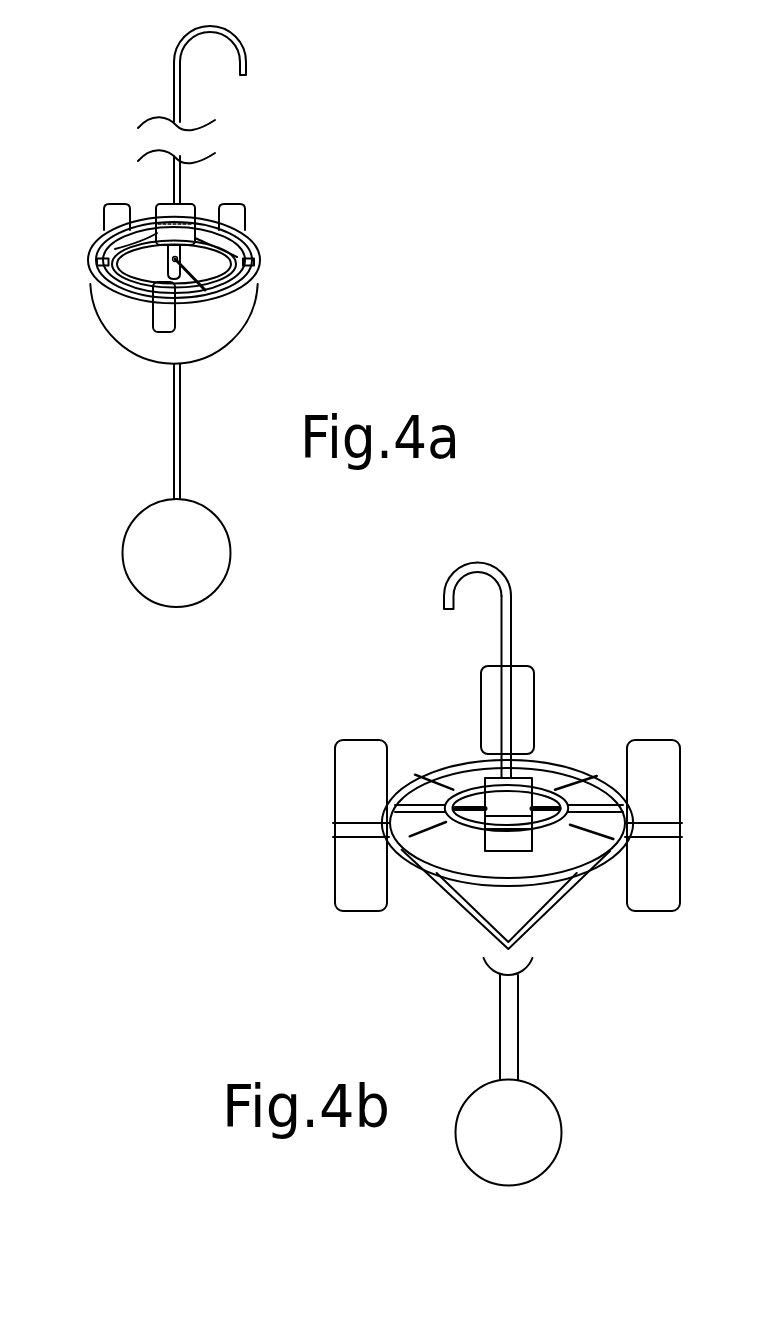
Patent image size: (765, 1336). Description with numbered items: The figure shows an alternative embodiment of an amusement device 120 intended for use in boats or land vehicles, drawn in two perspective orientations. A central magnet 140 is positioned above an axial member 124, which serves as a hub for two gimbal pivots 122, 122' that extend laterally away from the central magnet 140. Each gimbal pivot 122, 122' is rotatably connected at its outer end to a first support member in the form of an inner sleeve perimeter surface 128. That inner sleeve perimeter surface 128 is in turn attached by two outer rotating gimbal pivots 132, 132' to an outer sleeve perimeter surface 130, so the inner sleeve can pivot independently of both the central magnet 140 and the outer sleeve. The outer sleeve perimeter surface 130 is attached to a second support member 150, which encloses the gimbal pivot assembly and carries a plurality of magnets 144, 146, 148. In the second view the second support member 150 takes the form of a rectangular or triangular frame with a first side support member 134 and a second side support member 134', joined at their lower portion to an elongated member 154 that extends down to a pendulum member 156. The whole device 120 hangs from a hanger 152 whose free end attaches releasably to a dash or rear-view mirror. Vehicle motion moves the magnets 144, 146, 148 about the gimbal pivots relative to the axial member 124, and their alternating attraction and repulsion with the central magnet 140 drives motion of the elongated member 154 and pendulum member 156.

In FIG. 4A, the amusement device 120 is at (439, 209).
In FIG. 4A, the gimbal pivot 122 is at (201, 260).
In FIG. 4B, the gimbal pivot 122 is at (507, 806).
In FIG. 4A, the gimbal pivot 122' is at (74, 233).
In FIG. 4B, the gimbal pivot 122' is at (509, 759).
In FIG. 4A, the axial member 124 is at (160, 254).
In FIG. 4A, the inner sleeve perimeter surface 128 is at (104, 289).
In FIG. 4B, the inner sleeve perimeter surface 128 is at (547, 818).
In FIG. 4A, the outer sleeve perimeter surface 130 is at (229, 289).
In FIG. 4B, the outer sleeve perimeter surface 130 is at (422, 883).
In FIG. 4A, the outer rotating gimbal pivot 132 is at (282, 246).
In FIG. 4B, the outer rotating gimbal pivot 132 is at (641, 798).
In FIG. 4A, the outer rotating gimbal pivot 132' is at (90, 273).
In FIG. 4B, the outer rotating gimbal pivot 132' is at (424, 784).
In FIG. 4B, the first side support member 134 is at (462, 956).
In FIG. 4B, the second side support member 134' is at (535, 923).
In FIG. 4A, the central magnet 140 is at (184, 207).
In FIG. 4B, the central magnet 140 is at (519, 769).
In FIG. 4A, the magnet 144 is at (145, 316).
In FIG. 4B, the magnet 144 is at (335, 782).
In FIG. 4A, the magnet 146 is at (109, 202).
In FIG. 4B, the magnet 146 is at (477, 675).
In FIG. 4A, the magnet 148 is at (225, 205).
In FIG. 4B, the magnet 148 is at (657, 802).
In FIG. 4A, the second support member 150 is at (215, 329).
In FIG. 4A, the hanger 152 is at (165, 62).
In FIG. 4B, the hanger 152 is at (479, 555).
In FIG. 4A, the elongated member 154 is at (166, 427).
In FIG. 4B, the elongated member 154 is at (494, 1034).
In FIG. 4A, the pendulum member 156 is at (145, 534).
In FIG. 4B, the pendulum member 156 is at (529, 1120).